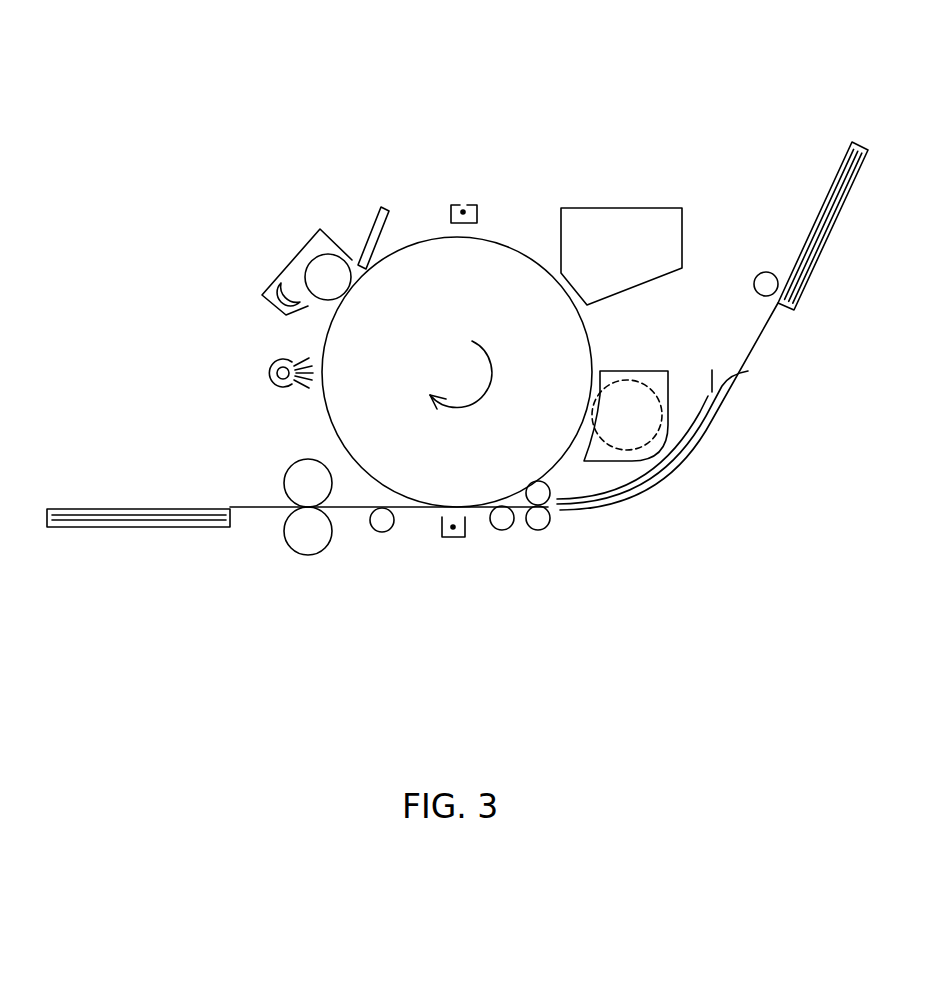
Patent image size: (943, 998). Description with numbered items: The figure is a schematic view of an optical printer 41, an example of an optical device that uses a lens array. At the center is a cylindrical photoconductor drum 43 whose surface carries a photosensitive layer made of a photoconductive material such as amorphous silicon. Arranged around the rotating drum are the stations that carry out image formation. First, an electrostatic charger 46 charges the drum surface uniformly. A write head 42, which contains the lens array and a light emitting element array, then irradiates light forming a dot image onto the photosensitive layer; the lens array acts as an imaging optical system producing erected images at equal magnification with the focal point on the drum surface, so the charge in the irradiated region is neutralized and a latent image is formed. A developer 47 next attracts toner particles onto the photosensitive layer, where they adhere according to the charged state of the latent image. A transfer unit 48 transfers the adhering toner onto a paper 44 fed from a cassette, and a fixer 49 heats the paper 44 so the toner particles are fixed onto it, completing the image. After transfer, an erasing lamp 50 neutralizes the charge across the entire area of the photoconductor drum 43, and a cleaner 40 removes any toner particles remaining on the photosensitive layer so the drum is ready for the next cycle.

The optical printer 41 is at (752, 93).
The photoconductor drum 43 is at (323, 407).
The cleaner 40 is at (287, 265).
The write head 42 is at (612, 208).
The paper 44 is at (822, 203).
The electrostatic charger 46 is at (463, 205).
The developer 47 is at (657, 371).
The transfer unit 48 is at (448, 538).
The fixer 49 is at (298, 556).
The erasing lamp 50 is at (268, 370).